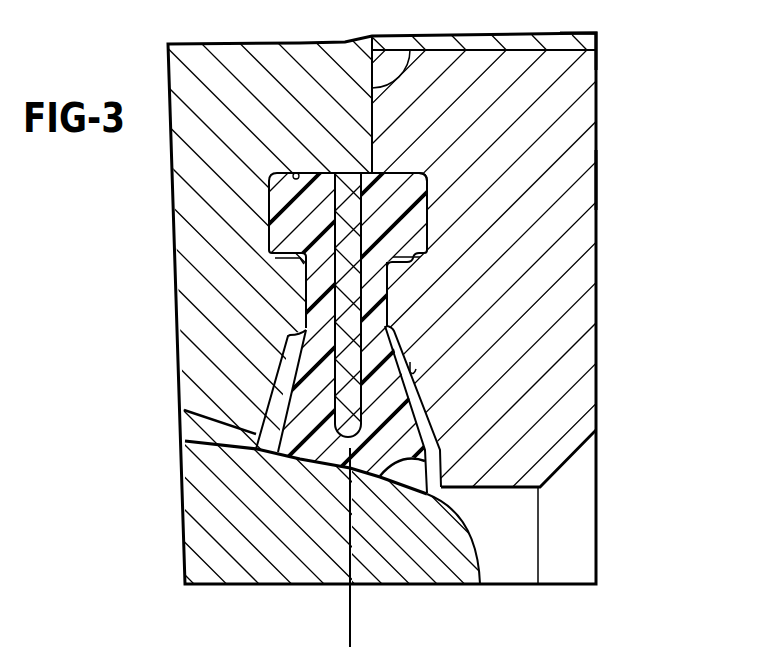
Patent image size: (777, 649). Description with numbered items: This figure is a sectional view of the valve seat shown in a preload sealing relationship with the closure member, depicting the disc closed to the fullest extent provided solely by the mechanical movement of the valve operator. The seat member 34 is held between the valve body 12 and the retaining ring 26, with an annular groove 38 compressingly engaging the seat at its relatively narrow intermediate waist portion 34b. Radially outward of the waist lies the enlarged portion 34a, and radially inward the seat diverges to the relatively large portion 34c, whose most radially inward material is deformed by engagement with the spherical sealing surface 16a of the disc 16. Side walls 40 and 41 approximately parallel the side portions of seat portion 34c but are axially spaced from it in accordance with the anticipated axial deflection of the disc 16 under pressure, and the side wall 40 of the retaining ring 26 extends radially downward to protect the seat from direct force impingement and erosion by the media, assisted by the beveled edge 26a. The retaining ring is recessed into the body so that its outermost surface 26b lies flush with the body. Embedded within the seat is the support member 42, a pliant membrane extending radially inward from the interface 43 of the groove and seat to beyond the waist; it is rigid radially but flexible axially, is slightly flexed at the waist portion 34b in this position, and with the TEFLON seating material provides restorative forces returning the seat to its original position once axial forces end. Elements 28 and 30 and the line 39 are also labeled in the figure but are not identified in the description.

The valve body 12 is at (177, 77).
The closure member 16 is at (203, 503).
The spherical sealing surface 16a is at (440, 508).
The retaining ring 26 is at (578, 92).
The beveled edge 26a is at (573, 455).
The outermost surface 26b is at (601, 180).
The top plate 28 is at (410, 50).
The corner of top plate 30 is at (603, 35).
The seat member 34 is at (388, 324).
The enlarged portion 34a is at (410, 192).
The intermediate waist portion 34b is at (390, 293).
The large portion 34c is at (410, 427).
The annular groove 38 is at (424, 172).
The center line 39 is at (352, 625).
The side wall 40 is at (418, 364).
The side wall 41 is at (283, 376).
The support member 42 is at (340, 285).
The interface 43 is at (292, 172).